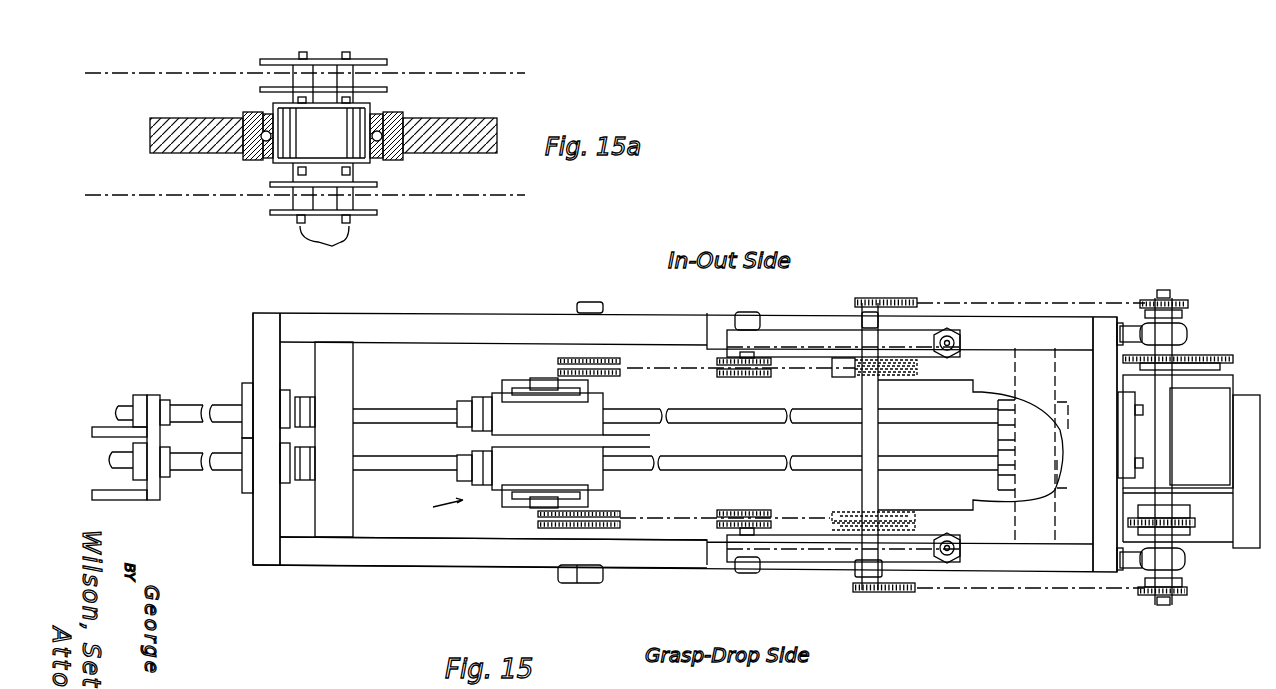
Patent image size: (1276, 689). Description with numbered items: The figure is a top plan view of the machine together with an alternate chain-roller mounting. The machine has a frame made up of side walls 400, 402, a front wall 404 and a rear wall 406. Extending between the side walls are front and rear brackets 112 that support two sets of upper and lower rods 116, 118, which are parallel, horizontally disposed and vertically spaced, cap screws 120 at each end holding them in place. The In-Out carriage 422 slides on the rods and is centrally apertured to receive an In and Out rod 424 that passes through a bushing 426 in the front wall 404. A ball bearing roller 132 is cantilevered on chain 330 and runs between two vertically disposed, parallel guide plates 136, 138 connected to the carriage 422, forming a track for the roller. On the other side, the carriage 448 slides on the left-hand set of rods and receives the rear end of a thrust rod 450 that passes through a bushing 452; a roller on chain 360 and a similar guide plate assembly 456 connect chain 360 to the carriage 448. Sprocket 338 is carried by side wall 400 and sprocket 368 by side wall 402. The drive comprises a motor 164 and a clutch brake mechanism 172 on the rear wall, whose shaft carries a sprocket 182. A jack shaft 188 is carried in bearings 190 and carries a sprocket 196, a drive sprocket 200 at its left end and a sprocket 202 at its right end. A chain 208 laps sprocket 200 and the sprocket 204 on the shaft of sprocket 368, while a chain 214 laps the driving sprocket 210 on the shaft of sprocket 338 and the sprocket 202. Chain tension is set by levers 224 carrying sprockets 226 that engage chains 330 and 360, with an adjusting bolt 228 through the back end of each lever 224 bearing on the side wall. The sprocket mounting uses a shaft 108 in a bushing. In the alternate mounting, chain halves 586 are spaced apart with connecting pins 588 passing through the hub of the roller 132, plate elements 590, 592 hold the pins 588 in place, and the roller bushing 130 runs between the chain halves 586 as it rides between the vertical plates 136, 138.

In FIG. 15A, the chain halves 586 is at (292, 60).
In FIG. 15A, the plate element 592 is at (352, 60).
In FIG. 15A, the plate element 590 is at (355, 220).
In FIG. 15A, the connecting pins 588 is at (328, 250).
In FIG. 15A, the guide plate 136 is at (193, 150).
In FIG. 15, the guide plate 136 is at (518, 382).
In FIG. 15A, the guide plate 138 is at (462, 152).
In FIG. 15, the guide plate 138 is at (580, 386).
In FIG. 15A, the ball bearing roller 132 is at (244, 160).
In FIG. 15, the ball bearing roller 132 is at (542, 378).
In FIG. 15A, the roller bushing 130 is at (350, 150).
In FIG. 15, the side wall 400 is at (316, 313).
In FIG. 15, the front wall 404 is at (268, 565).
In FIG. 15, the side wall 402 is at (378, 563).
In FIG. 15, the rear wall 406 is at (1105, 562).
In FIG. 15, the chain 208 is at (1010, 590).
In FIG. 15, the chain 214 is at (1028, 303).
In FIG. 15, the lever 224 is at (830, 340).
In FIG. 15, the adjusting bolt 228 is at (948, 330).
In FIG. 15, the shaft 108 is at (578, 310).
In FIG. 15, the bracket 112 is at (346, 364).
In FIG. 15, the cap screws 120 is at (302, 398).
In FIG. 15, the In and Out rod 424 is at (186, 405).
In FIG. 15, the bushing 426 is at (246, 383).
In FIG. 15, the bushing 452 is at (247, 493).
In FIG. 15, the thrust rod 450 is at (188, 468).
In FIG. 15, the In-Out carriage 422 is at (500, 405).
In FIG. 15, the guide plate assembly 456 is at (432, 506).
In FIG. 15, the carriage 448 is at (608, 448).
In FIG. 15, the upper rod 116 is at (628, 411).
In FIG. 15, the lower rod 118 is at (736, 470).
In FIG. 15, the chain 330 is at (662, 370).
In FIG. 15, the chain 360 is at (663, 520).
In FIG. 15, the sprocket 226 is at (745, 365).
In FIG. 15, the driving sprocket 210 is at (875, 298).
In FIG. 15, the sprocket 204 is at (895, 592).
In FIG. 15, the sprocket 338 is at (857, 380).
In FIG. 15, the sprocket 368 is at (897, 518).
In FIG. 15, the jack shaft 188 is at (1163, 290).
In FIG. 15, the sprocket 202 is at (1183, 300).
In FIG. 15, the bearings 190 is at (1180, 333).
In FIG. 15, the sprocket 182 is at (1193, 356).
In FIG. 15, the clutch brake mechanism 172 is at (1189, 461).
In FIG. 15, the motor 164 is at (1191, 516).
In FIG. 15, the sprocket 196 is at (1185, 523).
In FIG. 15, the drive sprocket 200 is at (1178, 594).